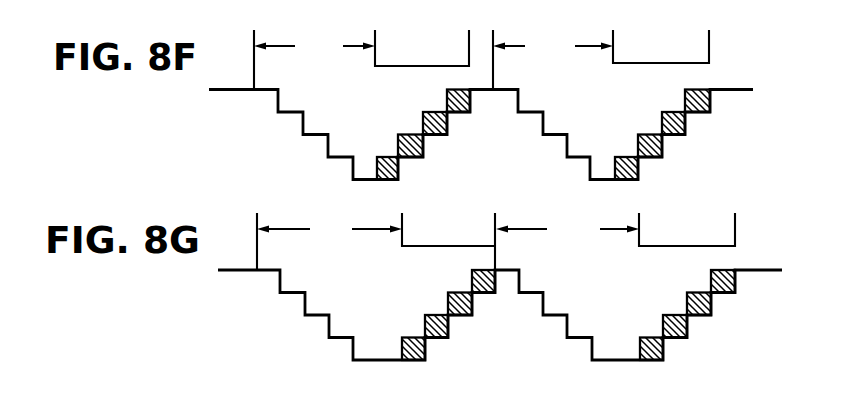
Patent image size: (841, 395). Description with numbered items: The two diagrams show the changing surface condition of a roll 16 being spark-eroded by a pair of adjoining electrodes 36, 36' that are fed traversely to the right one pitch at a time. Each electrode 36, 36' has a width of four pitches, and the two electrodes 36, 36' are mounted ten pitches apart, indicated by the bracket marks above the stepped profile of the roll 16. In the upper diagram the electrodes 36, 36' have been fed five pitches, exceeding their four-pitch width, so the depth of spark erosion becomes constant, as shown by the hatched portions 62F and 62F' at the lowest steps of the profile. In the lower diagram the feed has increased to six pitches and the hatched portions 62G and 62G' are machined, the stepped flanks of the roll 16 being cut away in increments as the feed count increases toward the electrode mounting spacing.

In FIG. 8F, the roll 16 is at (736, 90).
In FIG. 8G, the roll 16 is at (741, 270).
In FIG. 8F, the electrode 36 is at (379, 46).
In FIG. 8G, the electrode 36 is at (398, 224).
In FIG. 8F, the electrode 36' is at (632, 40).
In FIG. 8G, the electrode 36' is at (645, 212).
In FIG. 8F, the hatched portion 62F is at (433, 135).
In FIG. 8F, the hatched portion 62F' is at (678, 135).
In FIG. 8G, the hatched portion 62G is at (459, 315).
In FIG. 8G, the hatched portion 62G' is at (704, 315).